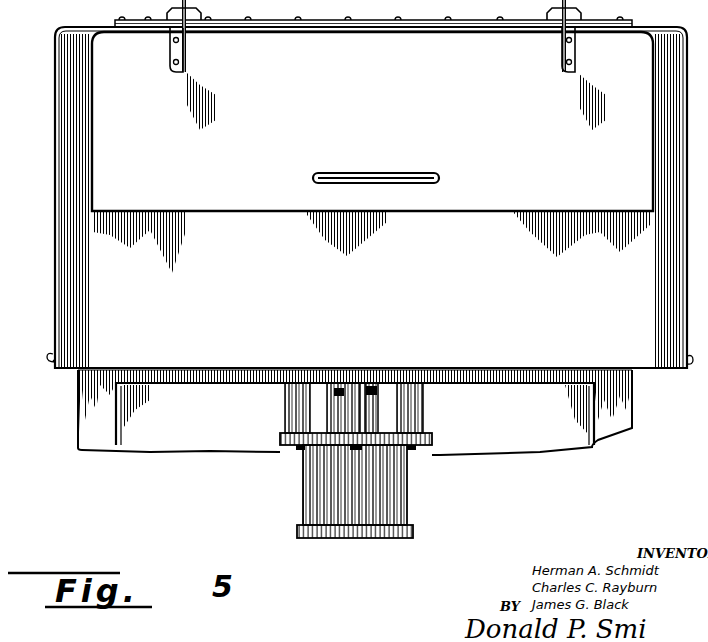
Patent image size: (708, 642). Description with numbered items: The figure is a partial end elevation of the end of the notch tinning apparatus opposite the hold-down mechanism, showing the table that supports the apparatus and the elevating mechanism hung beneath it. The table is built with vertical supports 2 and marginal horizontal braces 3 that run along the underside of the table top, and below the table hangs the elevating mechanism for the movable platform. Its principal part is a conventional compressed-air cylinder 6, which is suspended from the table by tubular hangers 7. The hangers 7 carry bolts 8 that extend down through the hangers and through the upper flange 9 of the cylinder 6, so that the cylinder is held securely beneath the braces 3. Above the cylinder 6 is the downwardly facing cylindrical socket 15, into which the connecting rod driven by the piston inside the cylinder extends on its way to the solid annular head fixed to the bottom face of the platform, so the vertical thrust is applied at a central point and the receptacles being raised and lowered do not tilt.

The vertical supports 2 is at (90, 411).
The marginal horizontal braces 3 is at (188, 380).
The cylinder 6 is at (405, 518).
The tubular hangers 7 is at (289, 415).
The bolts 8 is at (300, 449).
The upper flange 9 is at (368, 443).
The downwardly facing cylindrical socket 15 is at (380, 390).